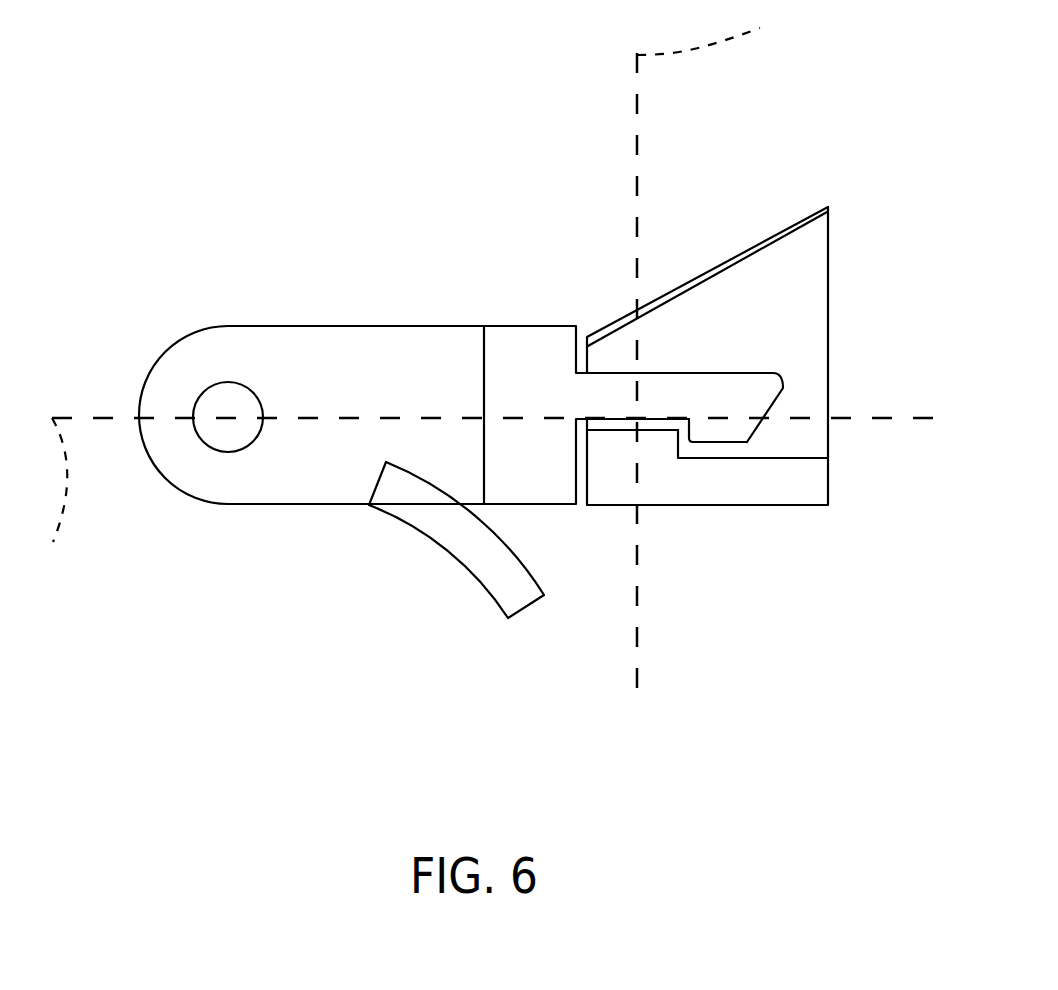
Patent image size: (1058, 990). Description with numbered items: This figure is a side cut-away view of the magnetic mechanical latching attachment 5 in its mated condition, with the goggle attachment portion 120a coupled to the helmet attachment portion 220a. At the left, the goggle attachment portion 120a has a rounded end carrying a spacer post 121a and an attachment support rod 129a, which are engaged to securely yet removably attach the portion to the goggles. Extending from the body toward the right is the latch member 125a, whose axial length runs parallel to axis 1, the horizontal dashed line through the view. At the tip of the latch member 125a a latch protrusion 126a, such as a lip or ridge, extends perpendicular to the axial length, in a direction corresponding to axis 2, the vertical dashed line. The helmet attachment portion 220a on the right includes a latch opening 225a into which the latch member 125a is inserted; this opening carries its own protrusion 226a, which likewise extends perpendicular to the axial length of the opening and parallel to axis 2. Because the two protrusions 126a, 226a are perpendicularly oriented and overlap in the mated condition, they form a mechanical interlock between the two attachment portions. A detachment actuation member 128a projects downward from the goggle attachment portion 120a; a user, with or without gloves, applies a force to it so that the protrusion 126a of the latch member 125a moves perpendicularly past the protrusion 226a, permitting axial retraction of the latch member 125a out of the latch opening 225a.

The axis 1 is at (62, 497).
The axis 2 is at (711, 33).
The magnetic mechanical latching attachment 5 is at (554, 152).
The goggle attachment portion 120a is at (469, 415).
The spacer post 121a is at (183, 340).
The latch member 125a is at (744, 384).
The latch protrusion 126a is at (703, 432).
The detachment actuation member 128a is at (495, 589).
The attachment support rod 129a is at (227, 432).
The helmet attachment portion 220a is at (717, 363).
The latch opening 225a is at (618, 428).
The protrusion 226a is at (667, 440).